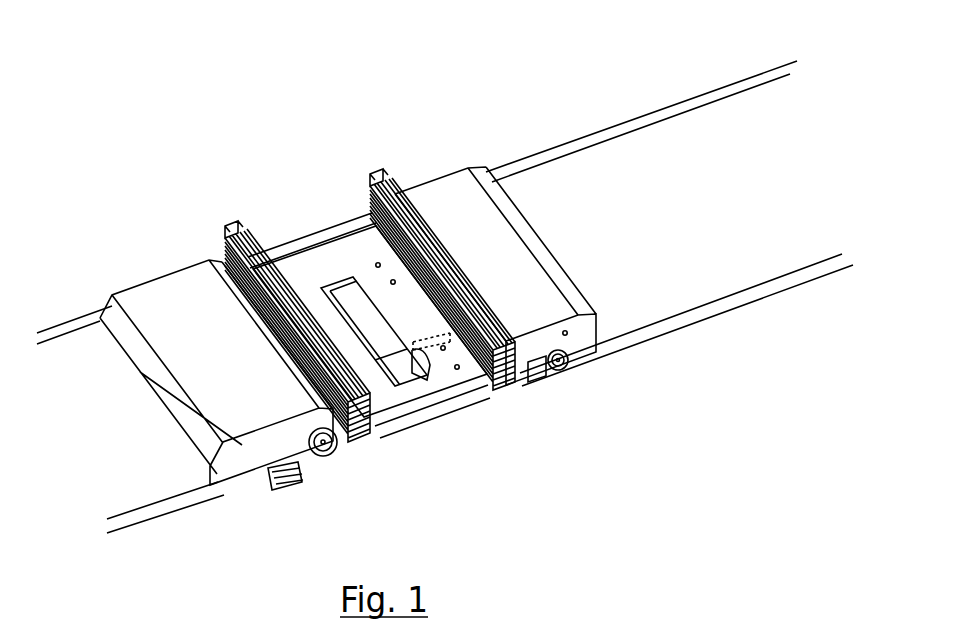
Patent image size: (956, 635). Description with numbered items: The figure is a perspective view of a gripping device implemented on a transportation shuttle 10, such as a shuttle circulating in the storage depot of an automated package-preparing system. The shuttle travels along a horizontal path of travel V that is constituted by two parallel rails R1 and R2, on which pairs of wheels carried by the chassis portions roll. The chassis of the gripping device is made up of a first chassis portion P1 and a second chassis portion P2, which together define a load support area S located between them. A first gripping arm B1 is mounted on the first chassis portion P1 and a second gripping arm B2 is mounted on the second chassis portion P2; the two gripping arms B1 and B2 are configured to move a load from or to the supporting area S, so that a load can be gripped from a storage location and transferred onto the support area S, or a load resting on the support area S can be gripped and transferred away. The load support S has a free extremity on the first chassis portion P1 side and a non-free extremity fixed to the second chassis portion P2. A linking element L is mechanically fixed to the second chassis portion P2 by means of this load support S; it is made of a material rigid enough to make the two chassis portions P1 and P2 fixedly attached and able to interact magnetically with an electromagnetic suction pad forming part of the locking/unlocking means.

The transportation shuttle 10 is at (175, 105).
The rail R1 is at (780, 292).
The rail R2 is at (572, 141).
The first chassis portion P1 is at (510, 255).
The second chassis portion P2 is at (168, 310).
The load support area S is at (362, 260).
The linking element L is at (413, 347).
The first gripping arm B1 is at (500, 376).
The second gripping arm B2 is at (372, 435).
The path of travel V is at (772, 174).